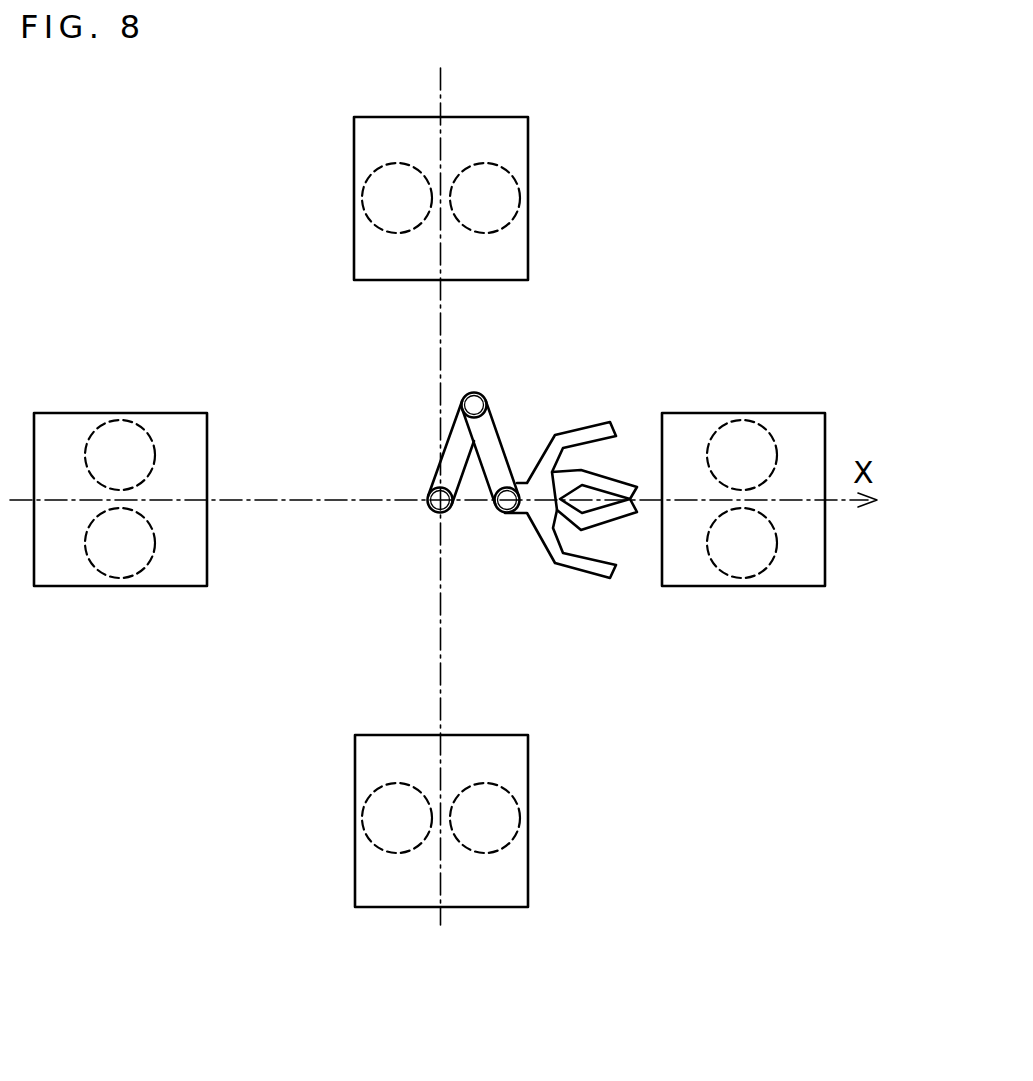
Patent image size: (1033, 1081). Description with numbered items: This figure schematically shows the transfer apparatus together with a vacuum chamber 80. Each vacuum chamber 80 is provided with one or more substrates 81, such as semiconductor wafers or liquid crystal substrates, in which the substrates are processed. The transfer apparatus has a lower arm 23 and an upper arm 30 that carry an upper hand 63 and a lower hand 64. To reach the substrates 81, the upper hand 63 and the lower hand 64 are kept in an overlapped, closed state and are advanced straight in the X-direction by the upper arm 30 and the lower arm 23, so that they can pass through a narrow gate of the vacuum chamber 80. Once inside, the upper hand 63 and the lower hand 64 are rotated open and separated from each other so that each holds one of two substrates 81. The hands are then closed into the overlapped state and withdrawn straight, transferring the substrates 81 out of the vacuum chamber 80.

The lower arm 23 is at (460, 427).
The upper arm 30 is at (494, 427).
The upper hand 63 is at (572, 435).
The lower hand 64 is at (573, 567).
The vacuum chamber 80 is at (528, 148).
The substrate 81 is at (365, 190).